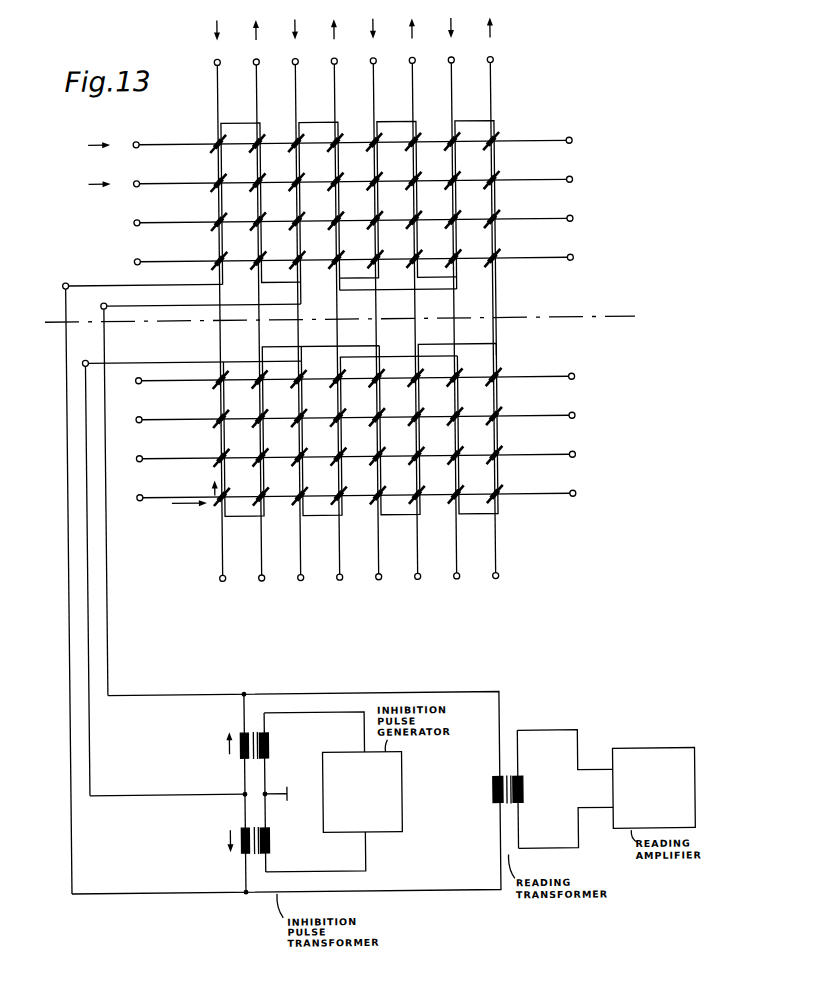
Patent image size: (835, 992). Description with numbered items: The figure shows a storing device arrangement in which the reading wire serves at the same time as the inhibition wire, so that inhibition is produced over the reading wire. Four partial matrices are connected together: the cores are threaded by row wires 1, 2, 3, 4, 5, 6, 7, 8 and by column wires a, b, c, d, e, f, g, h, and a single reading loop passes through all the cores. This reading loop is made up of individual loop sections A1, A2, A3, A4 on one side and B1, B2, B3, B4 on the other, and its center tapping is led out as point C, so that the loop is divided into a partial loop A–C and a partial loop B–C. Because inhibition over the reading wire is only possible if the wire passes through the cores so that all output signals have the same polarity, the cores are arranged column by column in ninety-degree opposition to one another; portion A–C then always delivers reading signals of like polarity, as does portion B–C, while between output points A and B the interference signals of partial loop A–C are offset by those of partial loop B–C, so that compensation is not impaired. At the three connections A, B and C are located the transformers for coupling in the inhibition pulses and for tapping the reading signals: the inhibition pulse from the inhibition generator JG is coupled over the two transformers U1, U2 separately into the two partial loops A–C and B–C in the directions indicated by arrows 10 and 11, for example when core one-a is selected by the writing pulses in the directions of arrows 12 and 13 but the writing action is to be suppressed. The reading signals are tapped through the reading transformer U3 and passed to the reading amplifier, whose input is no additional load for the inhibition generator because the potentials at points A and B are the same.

The row wire 1 is at (362, 496).
The row wire 2 is at (361, 457).
The row wire 3 is at (361, 418).
The row wire 4 is at (361, 379).
The row wire 5 is at (359, 260).
The row wire 6 is at (359, 221).
The row wire 7 is at (336, 182).
The row wire 8 is at (336, 143).
The column wire a is at (220, 310).
The column wire b is at (259, 310).
The column wire c is at (297, 310).
The column wire d is at (337, 309).
The column wire e is at (376, 309).
The column wire f is at (415, 308).
The column wire g is at (454, 308).
The column wire h is at (493, 308).
The reading loop connection A is at (137, 582).
The reading loop connection B is at (196, 496).
The center tapping of the reading loop C is at (188, 574).
The partial loop section A1 is at (223, 276).
The partial loop section A2 is at (301, 293).
The partial loop section A3 is at (226, 359).
The partial loop section A4 is at (283, 346).
The partial loop section B1 is at (421, 281).
The partial loop section B2 is at (496, 278).
The partial loop section B3 is at (419, 346).
The partial loop section B4 is at (498, 358).
The inhibition pulse direction arrow 10 is at (225, 747).
The inhibition pulse direction arrow 11 is at (226, 842).
The writing pulse direction arrow 12 is at (208, 486).
The writing pulse direction arrow 13 is at (189, 511).
The inhibition transformer U1 is at (246, 747).
The inhibition transformer U2 is at (247, 842).
The reading transformer U3 is at (519, 789).
The inhibition generator JG is at (397, 790).